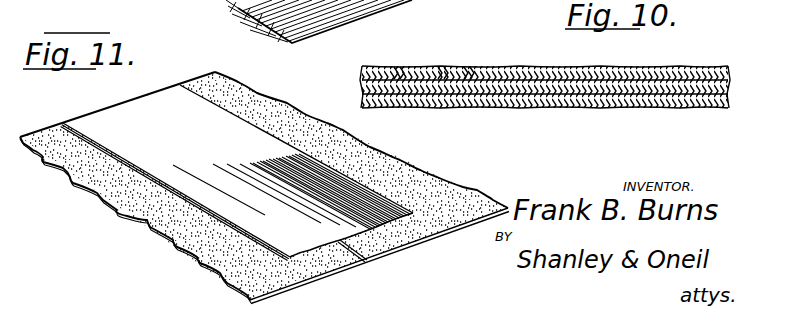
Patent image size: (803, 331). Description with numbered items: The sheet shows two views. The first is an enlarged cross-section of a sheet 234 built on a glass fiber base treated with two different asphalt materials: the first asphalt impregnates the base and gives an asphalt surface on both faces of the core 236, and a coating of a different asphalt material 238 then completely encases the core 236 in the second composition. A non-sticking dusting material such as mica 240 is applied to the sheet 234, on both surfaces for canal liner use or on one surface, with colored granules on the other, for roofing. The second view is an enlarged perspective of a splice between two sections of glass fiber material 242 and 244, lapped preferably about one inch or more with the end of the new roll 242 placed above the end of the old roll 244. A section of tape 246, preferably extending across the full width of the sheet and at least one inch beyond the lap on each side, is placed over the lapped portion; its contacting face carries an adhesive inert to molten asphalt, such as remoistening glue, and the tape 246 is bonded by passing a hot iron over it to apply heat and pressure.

In FIG. 10, the sheet 234 is at (700, 77).
In FIG. 11, the core 236 is at (325, 20).
In FIG. 10, the core 236 is at (468, 68).
In FIG. 10, the different asphalt material 238 is at (398, 70).
In FIG. 10, the mica 240 is at (443, 67).
In FIG. 11, the section of glass fiber material (new roll) 242 is at (427, 228).
In FIG. 11, the section of glass fiber material (old roll) 244 is at (300, 273).
In FIG. 11, the tape 246 is at (163, 103).